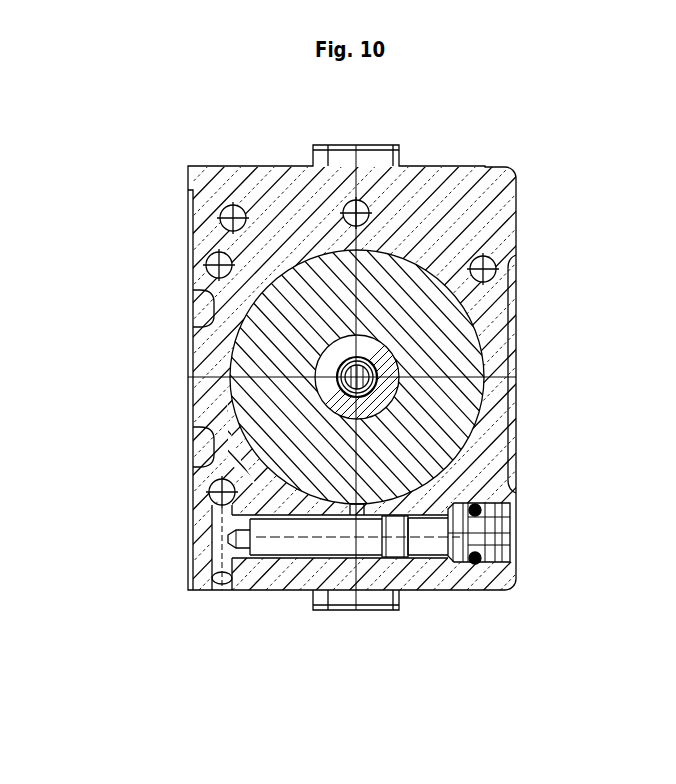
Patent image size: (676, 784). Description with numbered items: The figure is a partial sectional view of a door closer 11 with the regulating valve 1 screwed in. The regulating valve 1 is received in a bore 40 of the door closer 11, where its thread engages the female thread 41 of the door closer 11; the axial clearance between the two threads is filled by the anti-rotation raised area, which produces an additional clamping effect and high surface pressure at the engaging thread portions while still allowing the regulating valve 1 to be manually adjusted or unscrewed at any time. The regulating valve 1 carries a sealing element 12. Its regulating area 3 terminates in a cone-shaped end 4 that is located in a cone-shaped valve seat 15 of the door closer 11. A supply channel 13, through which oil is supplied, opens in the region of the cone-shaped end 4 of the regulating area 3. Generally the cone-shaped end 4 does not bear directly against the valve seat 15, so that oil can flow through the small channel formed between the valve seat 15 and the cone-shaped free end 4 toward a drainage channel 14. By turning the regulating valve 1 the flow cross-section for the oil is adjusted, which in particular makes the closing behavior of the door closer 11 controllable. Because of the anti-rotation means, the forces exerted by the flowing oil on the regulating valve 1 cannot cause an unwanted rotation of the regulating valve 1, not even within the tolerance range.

The regulating valve 1 is at (371, 531).
The regulating area 3 is at (292, 548).
The end of the regulating area 4 is at (262, 545).
The door closer 11 is at (565, 318).
The sealing element 12 is at (478, 563).
The supply channel 13 is at (217, 540).
The drainage channel 14 is at (365, 513).
The cone-shaped valve seat 15 is at (246, 521).
The bore 40 is at (318, 559).
The female thread 41 is at (376, 551).